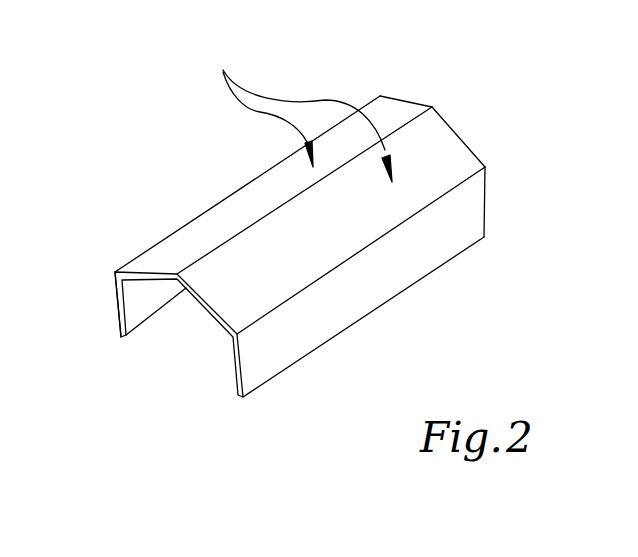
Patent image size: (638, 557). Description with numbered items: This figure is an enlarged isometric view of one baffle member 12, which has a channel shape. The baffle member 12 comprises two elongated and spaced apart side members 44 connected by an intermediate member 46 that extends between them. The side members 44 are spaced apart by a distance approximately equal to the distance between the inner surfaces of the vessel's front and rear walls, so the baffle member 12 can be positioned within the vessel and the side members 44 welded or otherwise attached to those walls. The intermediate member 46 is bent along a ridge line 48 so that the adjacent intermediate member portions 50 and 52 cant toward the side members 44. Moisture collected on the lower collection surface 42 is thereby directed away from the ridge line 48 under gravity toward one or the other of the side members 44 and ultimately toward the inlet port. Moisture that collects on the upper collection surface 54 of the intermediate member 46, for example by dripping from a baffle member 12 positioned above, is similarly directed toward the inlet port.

The baffle member 12 is at (311, 207).
The lower collection surface 42 is at (212, 318).
The side members 44 is at (300, 330).
The intermediate member 46 is at (433, 98).
The ridge line 48 is at (282, 202).
The intermediate member portion 50 is at (198, 233).
The intermediate member portion 52 is at (360, 238).
The upper collection surface 54 is at (302, 112).